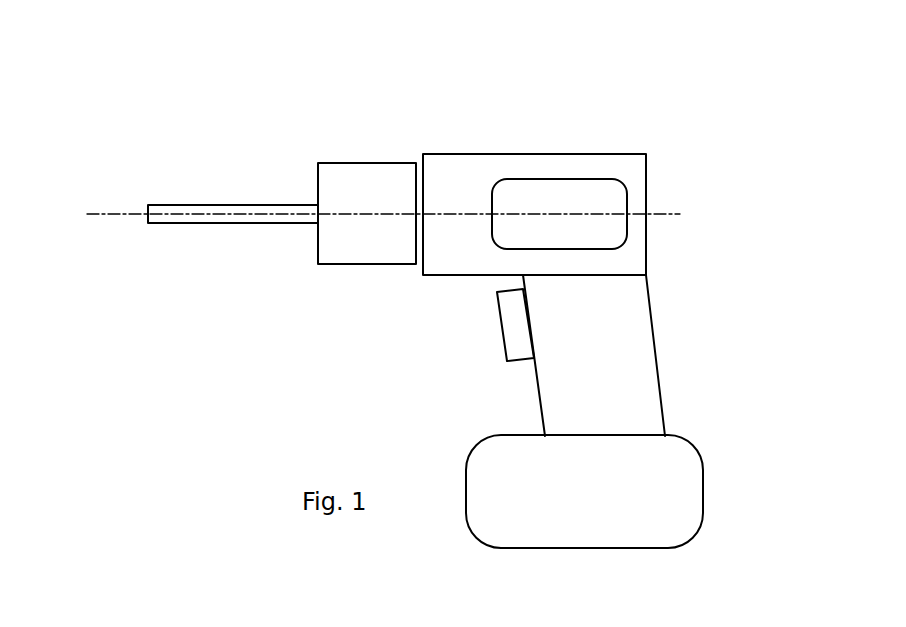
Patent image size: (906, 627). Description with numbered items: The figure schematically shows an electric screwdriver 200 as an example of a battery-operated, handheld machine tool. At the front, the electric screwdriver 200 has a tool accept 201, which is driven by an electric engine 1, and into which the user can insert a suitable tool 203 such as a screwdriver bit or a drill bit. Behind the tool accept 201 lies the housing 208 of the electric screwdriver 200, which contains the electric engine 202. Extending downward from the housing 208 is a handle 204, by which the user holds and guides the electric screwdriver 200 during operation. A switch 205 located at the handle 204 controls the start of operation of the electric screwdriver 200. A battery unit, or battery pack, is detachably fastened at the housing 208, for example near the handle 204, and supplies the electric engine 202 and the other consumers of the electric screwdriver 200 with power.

The electric screwdriver 200 is at (128, 68).
The tool 203 is at (200, 208).
The tool accept 201 is at (350, 176).
The housing 208 is at (450, 175).
The electric engine 202 is at (546, 192).
The handle 204 is at (628, 306).
The switch 205 is at (520, 330).
The electric engine 1 is at (640, 487).